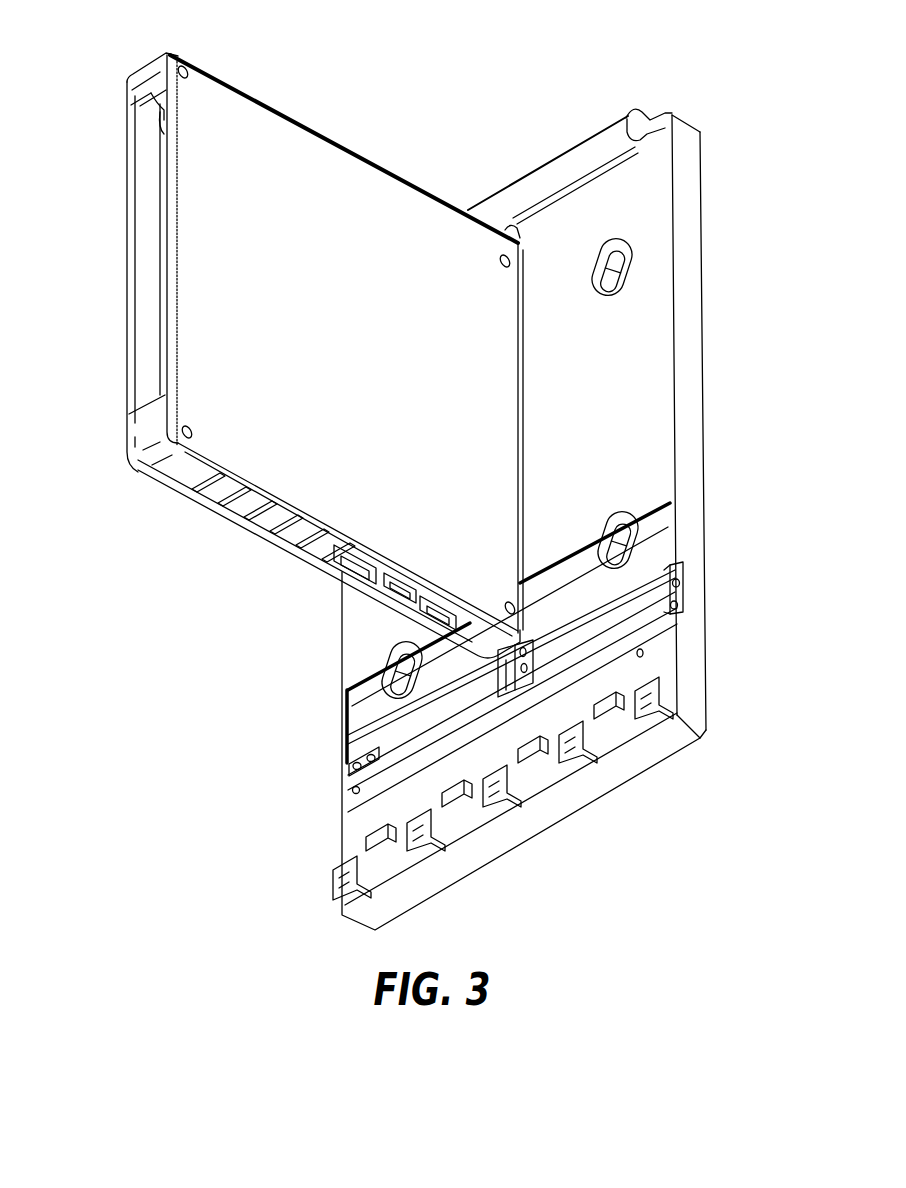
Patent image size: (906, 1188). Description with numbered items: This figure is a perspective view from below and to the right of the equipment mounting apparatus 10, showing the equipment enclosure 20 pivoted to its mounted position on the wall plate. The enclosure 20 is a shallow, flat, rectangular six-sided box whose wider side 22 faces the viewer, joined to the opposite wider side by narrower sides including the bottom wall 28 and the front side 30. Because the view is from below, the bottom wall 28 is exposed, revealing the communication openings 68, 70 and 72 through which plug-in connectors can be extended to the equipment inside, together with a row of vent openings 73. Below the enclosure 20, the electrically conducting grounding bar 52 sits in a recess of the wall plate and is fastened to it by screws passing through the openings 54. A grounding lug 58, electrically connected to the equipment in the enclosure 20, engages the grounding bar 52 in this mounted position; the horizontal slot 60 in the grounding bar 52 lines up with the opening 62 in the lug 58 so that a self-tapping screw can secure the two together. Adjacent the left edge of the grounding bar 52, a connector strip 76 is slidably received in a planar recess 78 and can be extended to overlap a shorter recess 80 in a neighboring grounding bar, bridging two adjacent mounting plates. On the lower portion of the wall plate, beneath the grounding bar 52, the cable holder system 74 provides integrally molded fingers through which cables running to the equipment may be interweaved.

The equipment mounting apparatus 10 is at (667, 80).
The equipment enclosure 20 is at (320, 157).
The wider side 22 is at (301, 333).
The bottom wall 28 is at (315, 548).
The front side 30 is at (133, 425).
The grounding bar 52 is at (676, 568).
The openings 54 is at (683, 604).
The grounding lug 58 is at (672, 560).
The horizontal slot 60 is at (644, 628).
The opening 62 is at (500, 698).
The communication opening 68 is at (345, 582).
The communication opening 70 is at (420, 612).
The communication opening 72 is at (345, 763).
The vent openings 73 is at (222, 505).
The cable holder system 74 is at (576, 757).
The connector strip 76 is at (346, 772).
The planar recess 78 is at (395, 745).
The shorter recess 80 is at (686, 578).